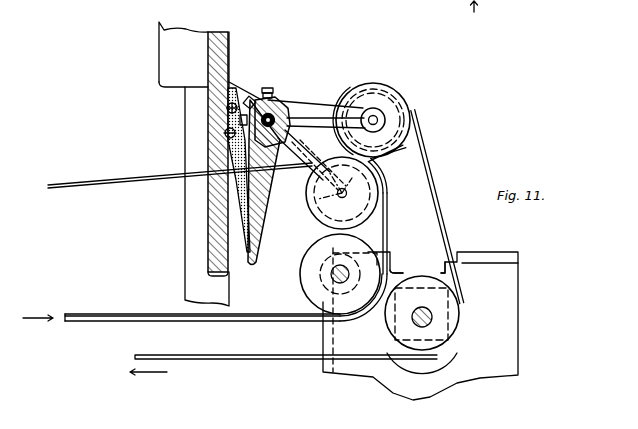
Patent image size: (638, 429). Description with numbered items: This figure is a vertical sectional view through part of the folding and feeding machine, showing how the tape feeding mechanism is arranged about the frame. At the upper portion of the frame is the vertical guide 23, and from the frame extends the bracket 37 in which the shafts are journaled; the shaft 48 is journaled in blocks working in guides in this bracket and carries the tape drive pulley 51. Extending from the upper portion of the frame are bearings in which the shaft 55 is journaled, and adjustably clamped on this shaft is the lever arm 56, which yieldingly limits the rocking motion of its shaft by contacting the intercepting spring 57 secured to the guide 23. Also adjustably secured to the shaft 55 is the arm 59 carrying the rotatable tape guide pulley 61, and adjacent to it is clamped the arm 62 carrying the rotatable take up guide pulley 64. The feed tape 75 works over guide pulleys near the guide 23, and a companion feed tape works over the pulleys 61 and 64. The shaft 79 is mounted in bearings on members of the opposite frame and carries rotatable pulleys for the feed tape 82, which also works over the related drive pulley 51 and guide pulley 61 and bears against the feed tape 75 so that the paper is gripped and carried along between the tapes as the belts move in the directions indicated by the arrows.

The vertical guide 23 is at (172, 58).
The bracket 37 is at (420, 324).
The shaft 48 is at (428, 311).
The tape drive pulley 51 is at (412, 273).
The shaft 55 is at (273, 107).
The lever arm 56 is at (264, 196).
The intercepting spring 57 is at (232, 218).
The arm 59 is at (328, 107).
The tape guide pulley 61 is at (390, 105).
The arm 62 is at (323, 160).
The take up guide pulley 64 is at (317, 215).
The feed tape 75 is at (140, 180).
The shaft 79 is at (338, 277).
The feed tape 82 is at (158, 323).